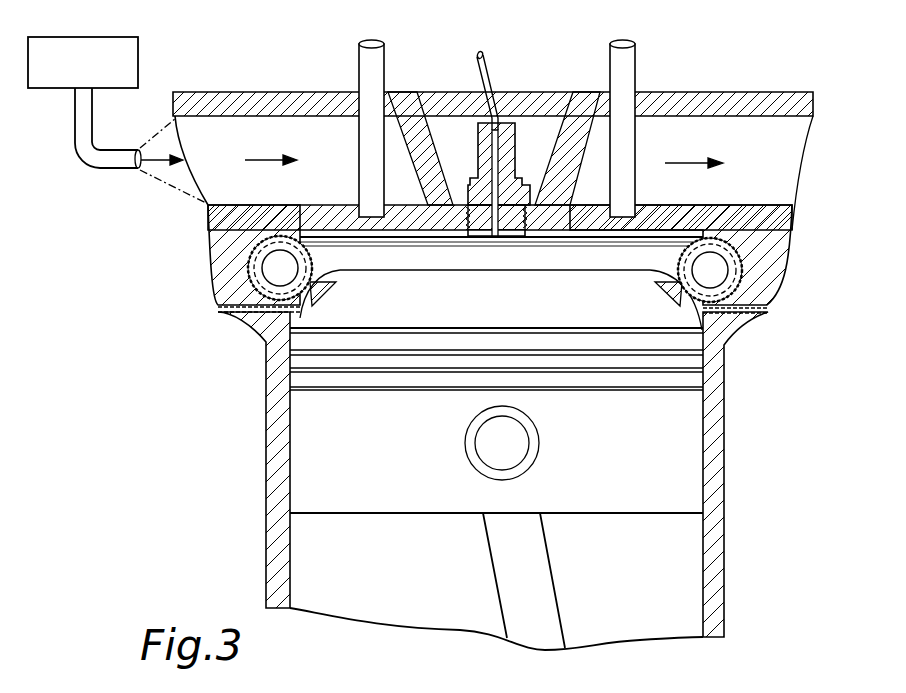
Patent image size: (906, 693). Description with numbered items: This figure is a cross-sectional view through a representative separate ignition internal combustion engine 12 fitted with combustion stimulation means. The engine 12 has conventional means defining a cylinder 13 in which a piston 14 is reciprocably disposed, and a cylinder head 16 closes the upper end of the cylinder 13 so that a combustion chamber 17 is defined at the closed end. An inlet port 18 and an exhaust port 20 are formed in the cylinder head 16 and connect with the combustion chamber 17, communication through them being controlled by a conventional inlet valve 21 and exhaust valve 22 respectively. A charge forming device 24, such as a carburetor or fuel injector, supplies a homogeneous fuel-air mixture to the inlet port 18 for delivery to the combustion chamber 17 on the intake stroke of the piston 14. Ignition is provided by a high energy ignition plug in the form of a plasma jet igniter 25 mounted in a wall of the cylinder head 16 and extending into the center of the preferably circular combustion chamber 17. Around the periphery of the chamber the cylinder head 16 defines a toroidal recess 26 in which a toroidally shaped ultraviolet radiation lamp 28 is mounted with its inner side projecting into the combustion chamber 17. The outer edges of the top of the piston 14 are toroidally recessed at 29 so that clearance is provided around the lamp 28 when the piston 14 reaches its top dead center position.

The engine 12 is at (748, 84).
The cylinder 13 is at (712, 605).
The piston 14 is at (583, 485).
The cylinder head 16 is at (770, 250).
The combustion chamber 17 is at (668, 268).
The inlet port 18 is at (300, 135).
The exhaust port 20 is at (674, 128).
The inlet valve 21 is at (378, 70).
The exhaust valve 22 is at (625, 78).
The charge forming device 24 is at (125, 70).
The plasma jet igniter 25 is at (510, 142).
The toroidal recess 26 is at (252, 252).
The ultraviolet radiation lamp 28 is at (316, 257).
The toroidal recess of piston top 29 is at (268, 330).